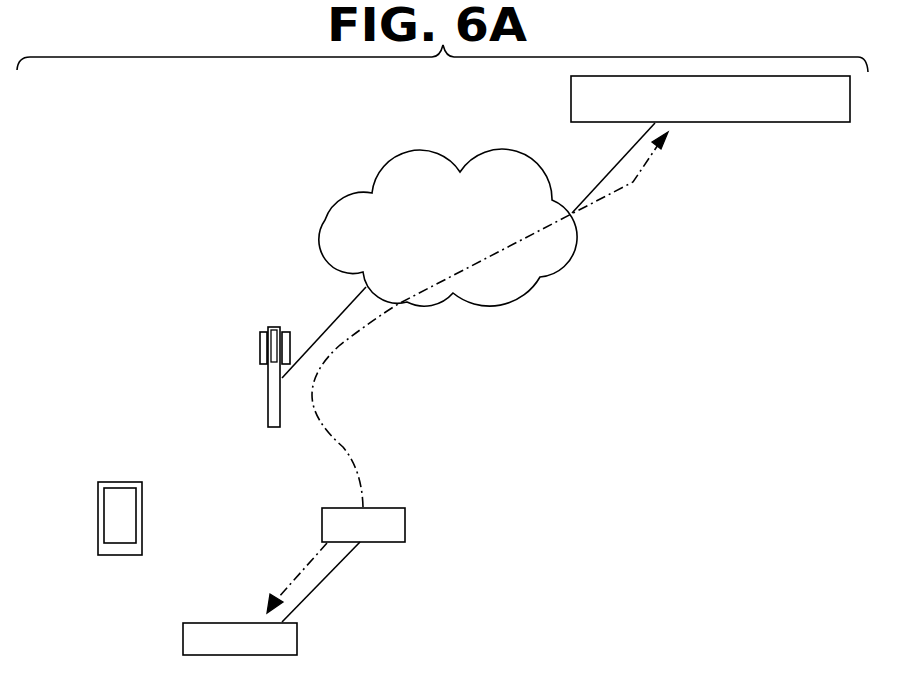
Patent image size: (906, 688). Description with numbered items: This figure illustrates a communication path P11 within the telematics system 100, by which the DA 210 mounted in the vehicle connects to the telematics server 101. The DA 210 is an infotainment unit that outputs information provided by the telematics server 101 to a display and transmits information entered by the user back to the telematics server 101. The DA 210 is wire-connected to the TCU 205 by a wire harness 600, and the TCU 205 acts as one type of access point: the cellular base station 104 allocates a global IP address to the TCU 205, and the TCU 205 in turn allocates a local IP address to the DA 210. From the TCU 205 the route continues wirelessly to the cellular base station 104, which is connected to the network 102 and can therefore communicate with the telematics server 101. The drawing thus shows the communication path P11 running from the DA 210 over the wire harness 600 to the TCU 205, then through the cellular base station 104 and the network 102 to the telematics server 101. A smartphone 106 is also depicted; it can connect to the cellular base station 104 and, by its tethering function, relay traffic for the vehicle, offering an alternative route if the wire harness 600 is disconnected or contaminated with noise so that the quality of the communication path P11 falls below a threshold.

The communication system 100 is at (352, 150).
The telematics server 101 is at (571, 98).
The network 102 is at (325, 220).
The cellular base station 104 is at (268, 406).
The smartphone 106 is at (98, 513).
The TCU 205 is at (405, 519).
The DA 210 is at (297, 629).
The wire harness 600 is at (332, 573).
The communication path P11 is at (633, 182).